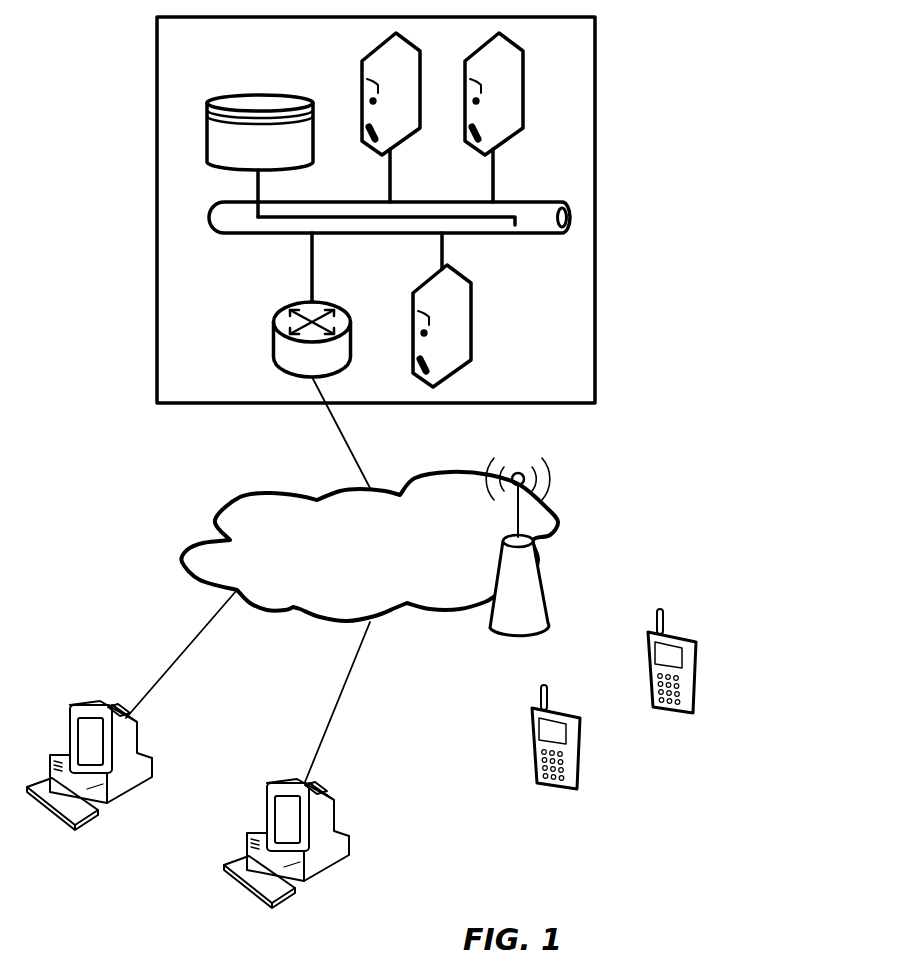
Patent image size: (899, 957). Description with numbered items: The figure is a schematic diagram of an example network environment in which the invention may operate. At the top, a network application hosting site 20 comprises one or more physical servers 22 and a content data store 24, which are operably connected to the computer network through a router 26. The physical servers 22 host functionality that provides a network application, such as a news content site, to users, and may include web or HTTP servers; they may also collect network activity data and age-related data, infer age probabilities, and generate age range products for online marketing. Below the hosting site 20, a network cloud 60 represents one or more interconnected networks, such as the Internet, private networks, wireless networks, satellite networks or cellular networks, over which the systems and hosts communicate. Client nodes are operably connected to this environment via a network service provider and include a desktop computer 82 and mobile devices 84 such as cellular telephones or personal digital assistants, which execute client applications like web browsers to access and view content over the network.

The network application hosting site 20 is at (156, 225).
The physical servers 22 is at (360, 95).
The content data store 24 is at (260, 95).
The router 26 is at (272, 341).
The network cloud 60 is at (182, 558).
The desktop computer 82 is at (85, 703).
The mobile devices 84 is at (702, 670).